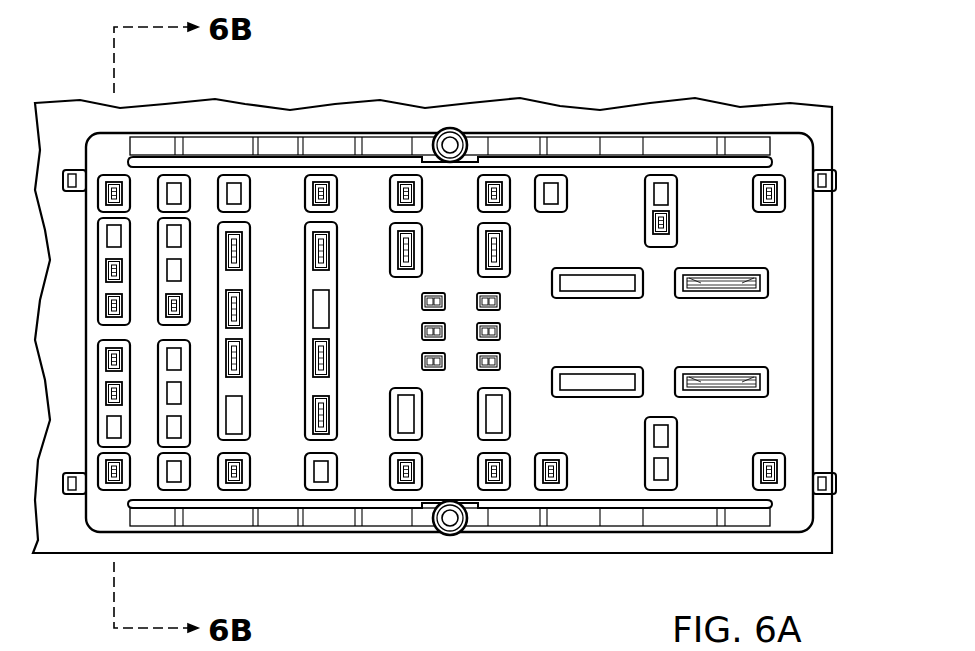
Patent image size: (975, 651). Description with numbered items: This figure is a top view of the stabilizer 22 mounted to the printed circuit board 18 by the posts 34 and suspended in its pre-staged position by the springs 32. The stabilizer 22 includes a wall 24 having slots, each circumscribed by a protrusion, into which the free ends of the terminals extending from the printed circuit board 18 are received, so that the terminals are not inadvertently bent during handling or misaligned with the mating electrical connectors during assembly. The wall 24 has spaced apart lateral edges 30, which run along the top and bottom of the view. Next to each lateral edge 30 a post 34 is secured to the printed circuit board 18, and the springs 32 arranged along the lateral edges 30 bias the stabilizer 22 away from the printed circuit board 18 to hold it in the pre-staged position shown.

The printed circuit board 18 is at (787, 553).
The stabilizer 22 is at (816, 253).
The wall 24 is at (795, 330).
The lateral edges 30 is at (335, 165).
The springs 32 is at (287, 145).
The post 34 is at (456, 128).